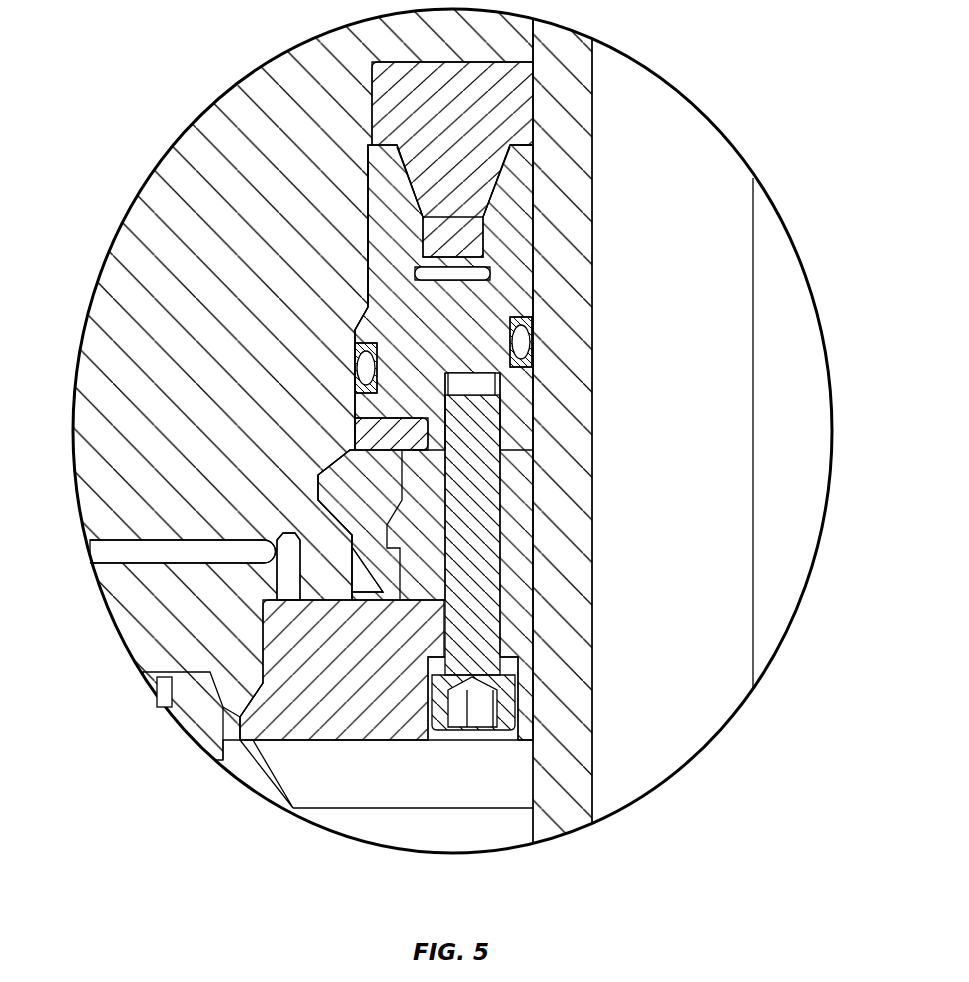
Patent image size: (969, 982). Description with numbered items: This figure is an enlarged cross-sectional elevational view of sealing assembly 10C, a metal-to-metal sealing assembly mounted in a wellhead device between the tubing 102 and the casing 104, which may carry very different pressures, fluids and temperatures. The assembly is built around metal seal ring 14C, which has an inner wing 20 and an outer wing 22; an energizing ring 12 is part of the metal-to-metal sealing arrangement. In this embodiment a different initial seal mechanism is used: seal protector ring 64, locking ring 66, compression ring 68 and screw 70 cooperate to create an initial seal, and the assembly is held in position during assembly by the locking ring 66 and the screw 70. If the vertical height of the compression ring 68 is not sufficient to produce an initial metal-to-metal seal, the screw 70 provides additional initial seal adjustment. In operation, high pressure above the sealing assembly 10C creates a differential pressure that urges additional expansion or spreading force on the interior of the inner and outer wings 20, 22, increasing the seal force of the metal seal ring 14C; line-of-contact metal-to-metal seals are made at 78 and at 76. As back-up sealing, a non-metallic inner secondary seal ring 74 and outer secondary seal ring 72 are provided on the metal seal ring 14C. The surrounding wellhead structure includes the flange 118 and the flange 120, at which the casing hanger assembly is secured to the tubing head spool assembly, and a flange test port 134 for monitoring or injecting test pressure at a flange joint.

The sealing assembly 10C is at (599, 100).
The energizing ring 12 is at (450, 120).
The metal seal ring 14C is at (458, 320).
The inner wing 20 is at (507, 228).
The outer wing 22 is at (366, 222).
The seal protector ring 64 is at (363, 433).
The locking ring 66 is at (353, 543).
The compression ring 68 is at (307, 702).
The screw 70 is at (472, 503).
The outer secondary seal ring 72 is at (363, 368).
The inner secondary seal ring 74 is at (527, 340).
The line-of-contact metal-to-metal seal 76 is at (397, 222).
The line-of-contact metal-to-metal seal 78 is at (535, 182).
The tubing 102 is at (790, 553).
The casing 104 is at (568, 692).
The flange 118 is at (255, 768).
The flange 120 is at (193, 222).
The flange test port 134 is at (190, 552).